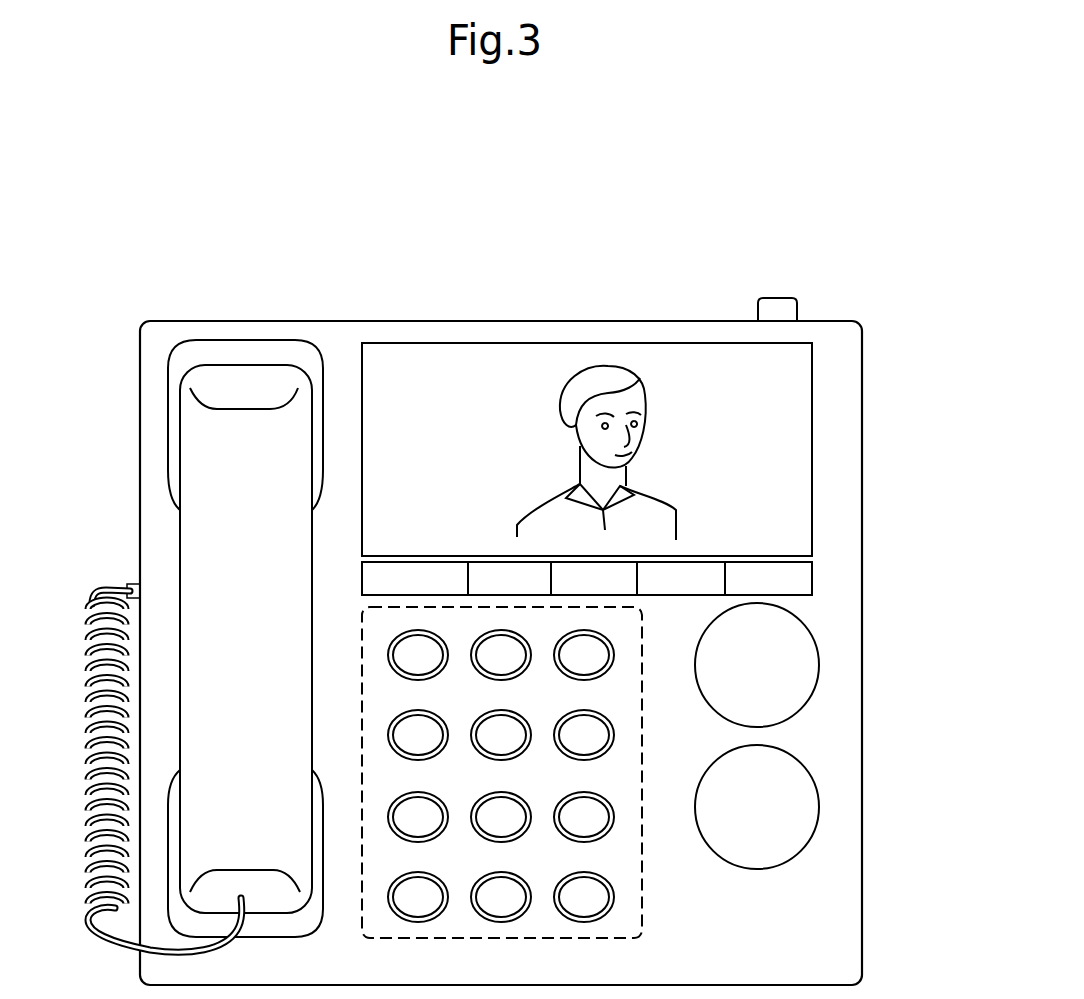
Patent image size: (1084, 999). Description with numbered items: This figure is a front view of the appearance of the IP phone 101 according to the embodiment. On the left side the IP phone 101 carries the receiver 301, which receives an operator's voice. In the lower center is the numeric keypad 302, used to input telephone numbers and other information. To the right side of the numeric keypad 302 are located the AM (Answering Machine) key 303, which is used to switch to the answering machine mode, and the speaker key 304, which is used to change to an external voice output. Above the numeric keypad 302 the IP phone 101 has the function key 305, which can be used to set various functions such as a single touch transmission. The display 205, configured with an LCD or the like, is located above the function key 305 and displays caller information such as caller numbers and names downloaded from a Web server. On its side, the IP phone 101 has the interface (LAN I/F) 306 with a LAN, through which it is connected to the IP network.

The IP phone 101 is at (206, 295).
The display 205 is at (798, 457).
The receiver 301 is at (190, 536).
The numeric keypad 302 is at (642, 912).
The AM (Answering Machine) key 303 is at (805, 692).
The speaker key 304 is at (805, 787).
The function key 305 is at (798, 579).
The interface (LAN I/F) 306 is at (778, 298).